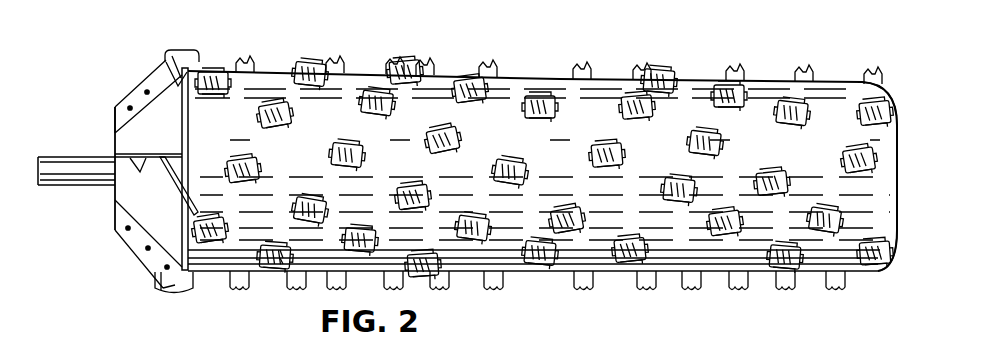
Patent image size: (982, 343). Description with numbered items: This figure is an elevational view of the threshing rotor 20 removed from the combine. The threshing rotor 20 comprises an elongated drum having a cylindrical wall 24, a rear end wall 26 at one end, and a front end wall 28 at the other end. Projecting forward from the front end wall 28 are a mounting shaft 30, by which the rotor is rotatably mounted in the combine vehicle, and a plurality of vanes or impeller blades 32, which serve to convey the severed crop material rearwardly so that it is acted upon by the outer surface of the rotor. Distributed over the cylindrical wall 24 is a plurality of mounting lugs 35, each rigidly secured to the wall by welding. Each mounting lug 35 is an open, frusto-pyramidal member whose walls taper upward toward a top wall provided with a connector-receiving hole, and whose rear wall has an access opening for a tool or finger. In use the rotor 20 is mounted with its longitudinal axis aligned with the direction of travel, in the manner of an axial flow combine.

The threshing rotor 20 is at (548, 56).
The cylindrical wall 24 is at (689, 97).
The rear end wall 26 is at (900, 130).
The front end wall 28 is at (127, 135).
The mounting shaft 30 is at (78, 181).
The impeller blade 32 is at (166, 60).
The mounting lug 35 is at (408, 58).